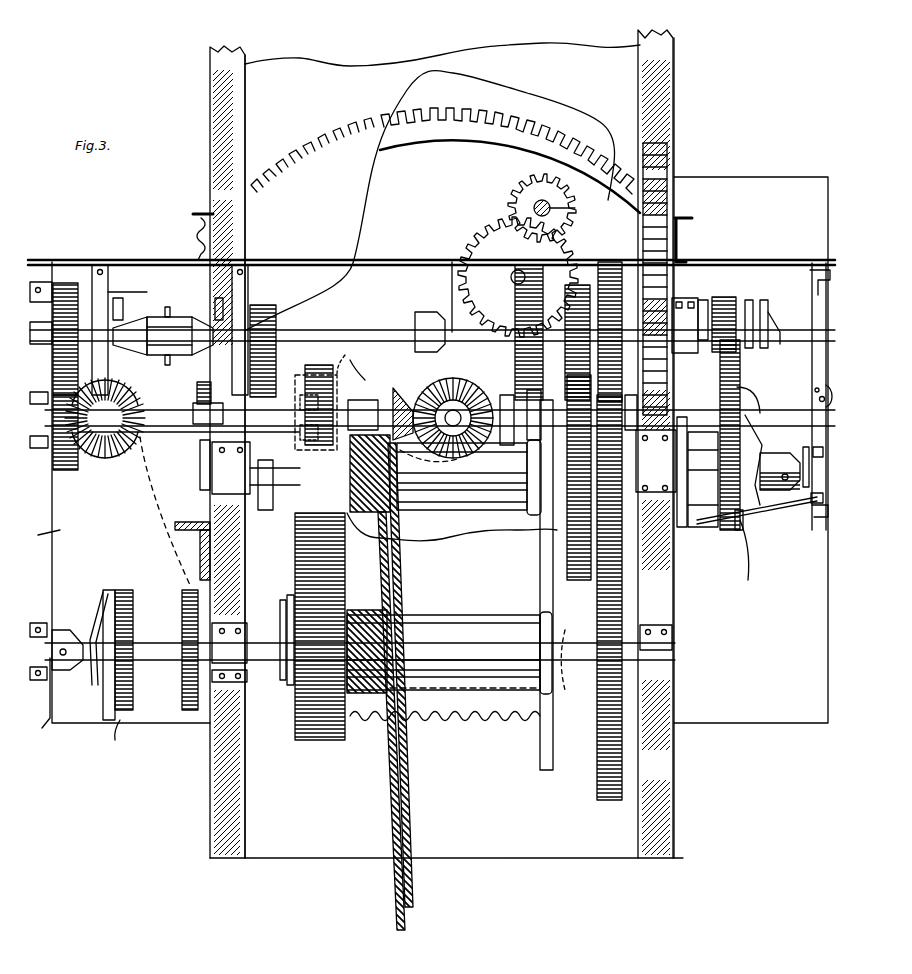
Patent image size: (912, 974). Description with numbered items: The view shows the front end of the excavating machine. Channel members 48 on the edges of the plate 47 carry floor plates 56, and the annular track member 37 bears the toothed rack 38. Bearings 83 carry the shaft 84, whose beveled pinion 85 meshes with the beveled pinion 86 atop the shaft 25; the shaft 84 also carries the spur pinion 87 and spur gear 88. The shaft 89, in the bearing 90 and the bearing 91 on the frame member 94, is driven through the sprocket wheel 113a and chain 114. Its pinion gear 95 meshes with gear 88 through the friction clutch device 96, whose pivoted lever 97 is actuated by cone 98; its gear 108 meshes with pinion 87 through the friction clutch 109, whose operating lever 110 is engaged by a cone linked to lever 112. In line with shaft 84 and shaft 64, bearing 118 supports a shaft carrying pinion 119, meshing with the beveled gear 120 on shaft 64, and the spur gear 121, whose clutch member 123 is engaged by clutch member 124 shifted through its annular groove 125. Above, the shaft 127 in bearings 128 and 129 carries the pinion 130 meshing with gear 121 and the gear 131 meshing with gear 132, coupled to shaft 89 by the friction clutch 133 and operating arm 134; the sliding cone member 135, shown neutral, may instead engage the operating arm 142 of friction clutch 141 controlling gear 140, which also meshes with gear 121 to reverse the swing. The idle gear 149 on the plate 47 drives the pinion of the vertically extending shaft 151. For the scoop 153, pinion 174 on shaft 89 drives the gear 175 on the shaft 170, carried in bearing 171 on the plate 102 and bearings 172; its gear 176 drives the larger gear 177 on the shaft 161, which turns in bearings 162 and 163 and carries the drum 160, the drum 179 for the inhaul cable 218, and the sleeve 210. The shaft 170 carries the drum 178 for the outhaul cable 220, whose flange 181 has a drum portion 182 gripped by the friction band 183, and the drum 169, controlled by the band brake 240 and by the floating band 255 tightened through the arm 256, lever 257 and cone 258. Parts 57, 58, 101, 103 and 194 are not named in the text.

The dashed outline 25 is at (430, 457).
The inner arc rim 37 is at (510, 170).
The toothed arc gear 38 is at (478, 116).
The casing outline 47 is at (442, 413).
The frame upright 48 is at (246, 118).
The housing box 56 is at (431, 450).
The bracket 57 is at (200, 540).
The stop bracket 58 is at (193, 212).
The bevel gear 64 is at (140, 395).
The bearing block 83 is at (363, 415).
The plate 84 is at (505, 440).
The bevel pinion 85 is at (398, 386).
The bevel gear 86 is at (470, 376).
The flange 87 is at (528, 426).
The link 88 is at (750, 415).
The upper shaft 89 is at (398, 330).
The bearing block 90 is at (680, 298).
The bearing block 91 is at (33, 308).
The rod 94 is at (60, 530).
The gear 95 is at (726, 296).
The bracket 96 is at (752, 298).
The bracket 97 is at (768, 300).
The lever 98 is at (782, 328).
The pin 101 is at (820, 399).
The pin 102 is at (815, 390).
The bracket 103 is at (812, 278).
The gear 108 is at (576, 290).
The hub 109 is at (514, 268).
The gear 110 is at (458, 290).
The clutch member 112 is at (432, 314).
The collar 113a is at (704, 298).
The rack 114 is at (668, 165).
The shaft 118 is at (180, 440).
The chain 119 is at (138, 455).
The gear 120 is at (87, 504).
The gear 121 is at (319, 397).
The sleeve 123 is at (287, 463).
The housing 124 is at (316, 412).
The spring 125 is at (350, 359).
The collar 127 is at (172, 420).
The bevel gear 128 is at (95, 430).
The bearing block 129 is at (208, 413).
The rod 130 is at (287, 480).
The clutch cone 131 is at (140, 318).
The gear 132 is at (70, 282).
The bracket 133 is at (105, 268).
The rod 134 is at (118, 296).
The clutch member 135 is at (185, 316).
The gear 140 is at (270, 304).
The plate 141 is at (240, 296).
The bracket 142 is at (250, 270).
The link 149 is at (370, 364).
The gear 151 is at (556, 240).
The pinion 153 is at (565, 208).
The gear 160 is at (157, 640).
The bracket 161 is at (90, 670).
The bearing bracket 162 is at (235, 625).
The clutch member 163 is at (66, 630).
The plate 169 is at (693, 467).
The plate 170 is at (200, 470).
The rod 171 is at (815, 490).
The bearing block 172 is at (444, 462).
The gear 174 is at (611, 331).
The plate 175 is at (540, 540).
The gear 176 is at (565, 520).
The gear 177 is at (596, 782).
The drum 178 is at (462, 476).
The drum 179 is at (443, 652).
The drum flange 181 is at (540, 512).
The rope coil 182 is at (372, 520).
The gear 183 is at (312, 648).
The plate 194 is at (265, 510).
The plate 210 is at (294, 630).
The rope 218 is at (384, 800).
The rope 220 is at (407, 750).
The gear 240 is at (690, 530).
The spring 255 is at (738, 550).
The plate 256 is at (745, 528).
The lever 257 is at (98, 584).
The block 258 is at (421, 602).